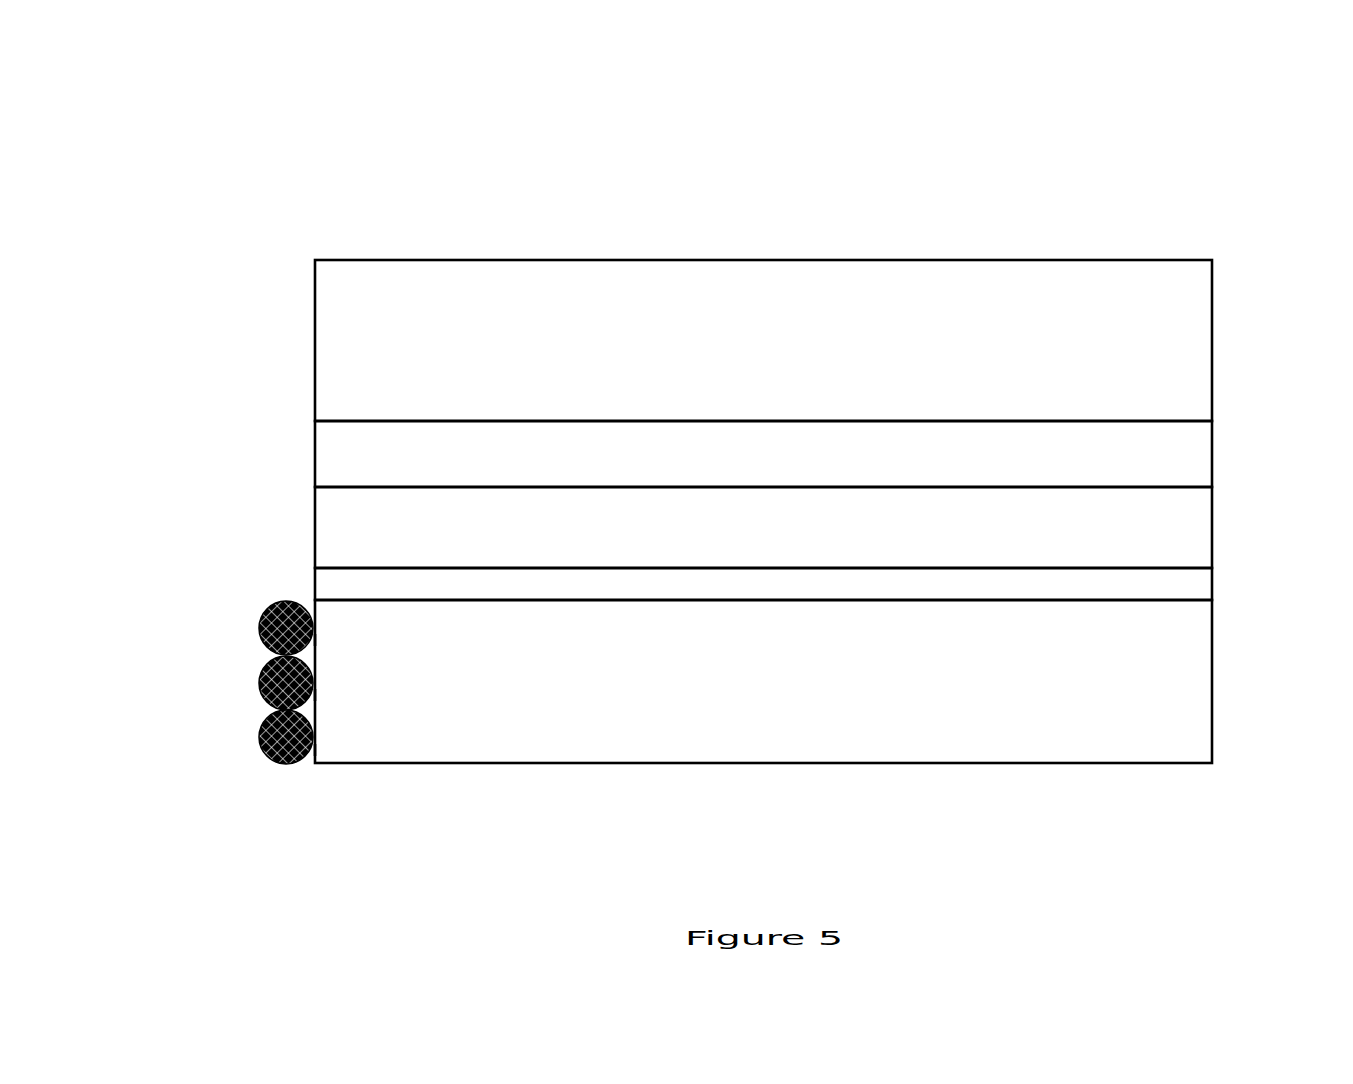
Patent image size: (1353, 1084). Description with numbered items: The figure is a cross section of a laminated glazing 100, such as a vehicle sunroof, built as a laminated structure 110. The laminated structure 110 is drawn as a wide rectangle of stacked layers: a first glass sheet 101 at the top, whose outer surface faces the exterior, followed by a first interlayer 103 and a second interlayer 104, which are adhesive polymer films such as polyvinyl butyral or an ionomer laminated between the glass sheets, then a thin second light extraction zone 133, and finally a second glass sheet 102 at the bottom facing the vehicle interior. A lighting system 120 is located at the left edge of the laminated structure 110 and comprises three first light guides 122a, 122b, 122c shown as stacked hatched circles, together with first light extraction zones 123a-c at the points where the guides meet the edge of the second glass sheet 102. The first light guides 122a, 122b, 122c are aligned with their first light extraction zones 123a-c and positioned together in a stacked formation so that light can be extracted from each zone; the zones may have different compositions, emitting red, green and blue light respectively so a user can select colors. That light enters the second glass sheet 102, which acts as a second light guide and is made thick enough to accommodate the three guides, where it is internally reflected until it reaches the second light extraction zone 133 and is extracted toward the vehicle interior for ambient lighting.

The glazing 100 is at (403, 163).
The laminated structure 110 is at (1215, 257).
The first glass sheet 101 is at (1190, 350).
The first interlayer 103 is at (1190, 453).
The second interlayer 104 is at (1190, 520).
The second light extraction zone 133 is at (330, 587).
The second glass sheet 102 is at (1190, 670).
The lighting system 120 is at (242, 577).
The first light guide 122a is at (252, 627).
The first light guide 122b is at (258, 682).
The first light guide 122c is at (257, 737).
The first light extraction zones 123a-c is at (317, 640).